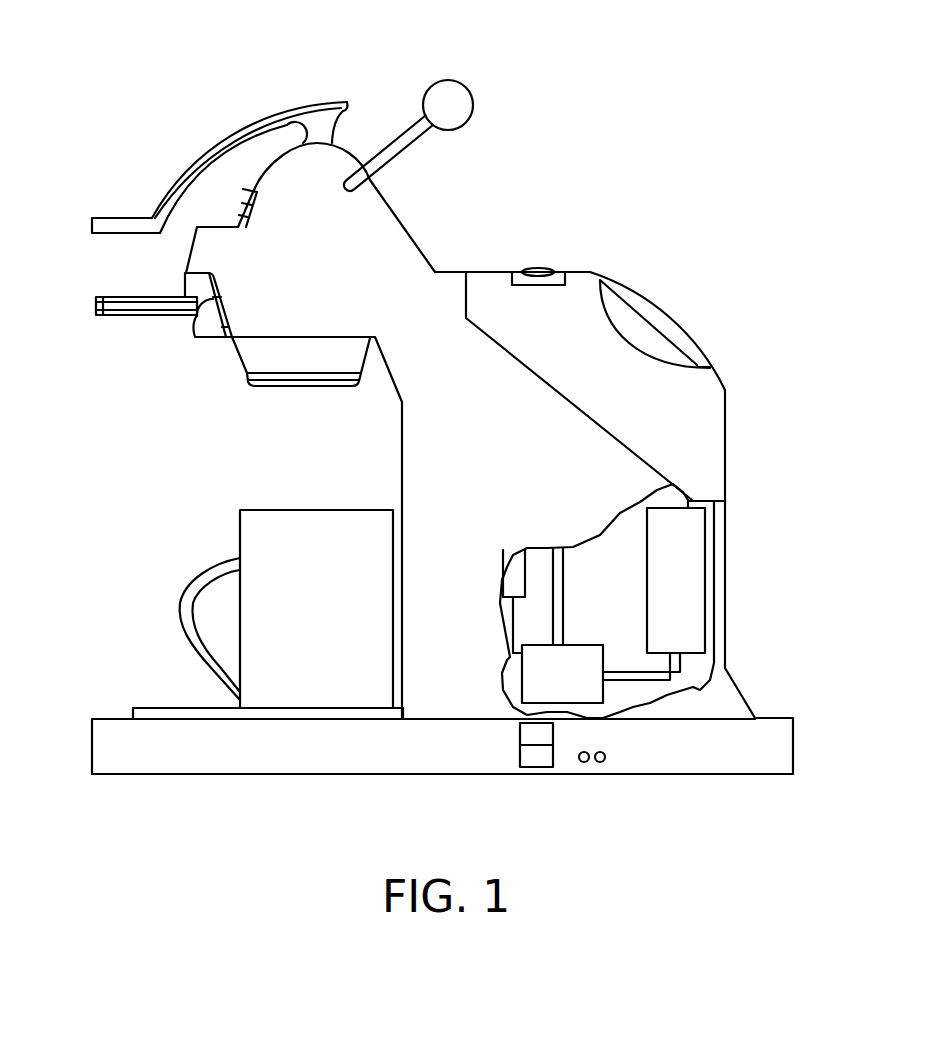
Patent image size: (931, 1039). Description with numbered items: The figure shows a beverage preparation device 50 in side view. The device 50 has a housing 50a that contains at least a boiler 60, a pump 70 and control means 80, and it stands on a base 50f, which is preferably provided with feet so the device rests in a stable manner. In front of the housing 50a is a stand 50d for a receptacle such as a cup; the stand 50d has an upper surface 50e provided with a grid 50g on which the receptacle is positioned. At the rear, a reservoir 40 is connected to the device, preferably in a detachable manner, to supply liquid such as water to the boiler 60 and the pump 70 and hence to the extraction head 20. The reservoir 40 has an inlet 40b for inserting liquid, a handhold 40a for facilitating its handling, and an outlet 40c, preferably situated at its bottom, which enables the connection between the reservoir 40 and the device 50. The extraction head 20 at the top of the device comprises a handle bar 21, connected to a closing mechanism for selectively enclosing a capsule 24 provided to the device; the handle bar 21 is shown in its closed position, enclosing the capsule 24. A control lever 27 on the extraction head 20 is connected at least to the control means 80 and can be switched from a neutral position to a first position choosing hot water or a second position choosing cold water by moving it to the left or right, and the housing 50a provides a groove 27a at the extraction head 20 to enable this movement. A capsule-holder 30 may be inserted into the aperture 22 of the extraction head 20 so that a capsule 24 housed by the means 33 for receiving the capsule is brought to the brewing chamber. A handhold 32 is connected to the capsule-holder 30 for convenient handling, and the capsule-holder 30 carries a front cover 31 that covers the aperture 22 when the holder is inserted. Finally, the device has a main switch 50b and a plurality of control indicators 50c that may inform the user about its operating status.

The extraction head 20 is at (308, 175).
The handle bar 21 is at (202, 162).
The aperture 22 is at (198, 318).
The capsule 24 is at (273, 378).
The control lever 27 is at (448, 97).
The groove 27a is at (350, 183).
The capsule-holder 30 is at (208, 328).
The front cover 31 is at (193, 283).
The handhold 32 is at (96, 296).
The means for receiving the capsule 33 is at (253, 353).
The reservoir 40 is at (693, 392).
The handhold 40a is at (675, 308).
The inlet 40b is at (577, 270).
The outlet 40c is at (700, 500).
The beverage preparation device 50 is at (537, 270).
The housing 50a is at (478, 662).
The main switch 50b is at (537, 770).
The control indicators 50c is at (592, 763).
The stand 50d is at (123, 760).
The upper surface 50e is at (208, 713).
The base 50f is at (297, 775).
The grid 50g is at (148, 707).
The boiler 60 is at (688, 562).
The pump 70 is at (573, 687).
The control means 80 is at (522, 568).